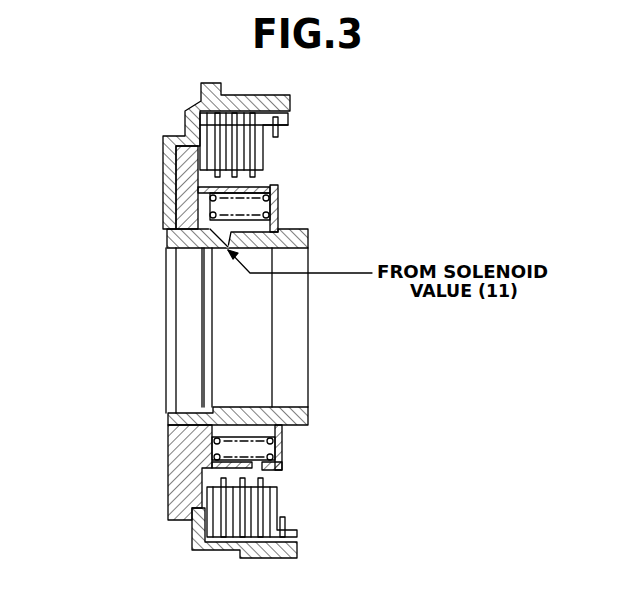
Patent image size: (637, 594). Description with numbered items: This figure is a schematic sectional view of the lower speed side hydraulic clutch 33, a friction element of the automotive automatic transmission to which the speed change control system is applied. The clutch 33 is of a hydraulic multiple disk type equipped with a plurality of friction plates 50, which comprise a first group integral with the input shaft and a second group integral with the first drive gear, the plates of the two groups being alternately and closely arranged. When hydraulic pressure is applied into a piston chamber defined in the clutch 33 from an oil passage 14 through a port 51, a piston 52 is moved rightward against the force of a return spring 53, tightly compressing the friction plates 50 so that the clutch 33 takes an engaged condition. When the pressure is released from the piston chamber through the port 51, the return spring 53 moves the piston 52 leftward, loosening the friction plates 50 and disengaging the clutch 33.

The lower speed side hydraulic clutch 33 is at (162, 155).
The friction plates 50 is at (283, 147).
The oil passage 14 is at (343, 272).
The port 51 is at (223, 247).
The piston 52 is at (195, 452).
The return spring 53 is at (262, 455).